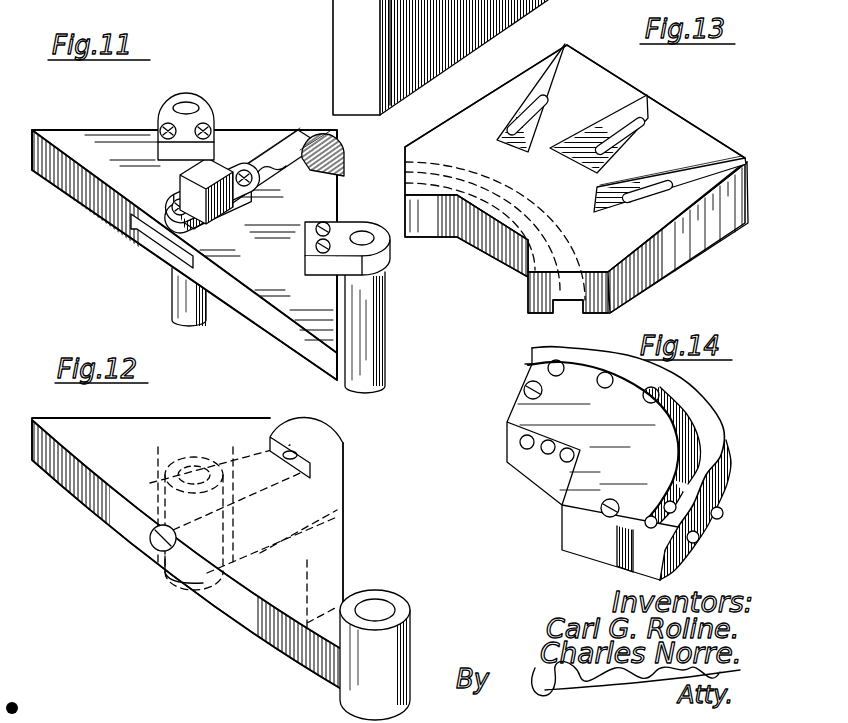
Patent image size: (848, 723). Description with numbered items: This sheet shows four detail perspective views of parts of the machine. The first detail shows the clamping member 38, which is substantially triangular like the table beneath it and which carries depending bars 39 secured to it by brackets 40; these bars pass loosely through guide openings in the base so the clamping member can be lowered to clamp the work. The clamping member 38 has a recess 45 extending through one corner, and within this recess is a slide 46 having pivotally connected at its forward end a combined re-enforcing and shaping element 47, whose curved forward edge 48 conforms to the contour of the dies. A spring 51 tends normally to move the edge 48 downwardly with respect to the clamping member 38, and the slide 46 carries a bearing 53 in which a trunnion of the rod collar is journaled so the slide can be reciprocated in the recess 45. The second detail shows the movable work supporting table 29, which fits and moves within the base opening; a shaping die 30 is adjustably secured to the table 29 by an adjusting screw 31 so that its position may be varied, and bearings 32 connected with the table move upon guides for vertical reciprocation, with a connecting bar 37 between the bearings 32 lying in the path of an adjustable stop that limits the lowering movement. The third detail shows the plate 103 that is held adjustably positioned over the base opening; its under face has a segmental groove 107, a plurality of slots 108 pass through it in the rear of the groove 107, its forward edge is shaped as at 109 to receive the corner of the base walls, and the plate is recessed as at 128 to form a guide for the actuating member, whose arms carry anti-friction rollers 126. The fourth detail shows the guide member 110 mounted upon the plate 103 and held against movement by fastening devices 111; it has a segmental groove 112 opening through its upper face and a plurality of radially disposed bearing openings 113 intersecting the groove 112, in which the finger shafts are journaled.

In FIG. 11, the clamping member 38 is at (90, 143).
In FIG. 11, the depending bars 39 is at (185, 298).
In FIG. 11, the brackets 40 is at (170, 100).
In FIG. 11, the recess 45 is at (278, 165).
In FIG. 11, the slide 46 is at (128, 233).
In FIG. 11, the combined re-enforcing and shaping element 47 is at (331, 155).
In FIG. 11, the forward edge 48 is at (328, 146).
In FIG. 11, the spring 51 is at (262, 170).
In FIG. 11, the bearing 53 is at (197, 177).
In FIG. 12, the work supporting table 29 is at (100, 432).
In FIG. 12, the shaping die 30 is at (330, 440).
In FIG. 12, the adjusting screw 31 is at (150, 546).
In FIG. 12, the bearings 32 is at (160, 487).
In FIG. 12, the connecting bar 37 is at (281, 546).
In FIG. 13, the plate 103 is at (660, 223).
In FIG. 13, the segmental groove 107 is at (566, 304).
In FIG. 13, the slots 108 is at (543, 100).
In FIG. 13, the shaped forward edge 109 is at (493, 247).
In FIG. 13, the anti-friction rollers 126 is at (644, 118).
In FIG. 13, the recess 128 is at (667, 119).
In FIG. 14, the guide member 110 is at (598, 548).
In FIG. 14, the fastening devices 111 is at (530, 410).
In FIG. 14, the segmental groove 112 is at (655, 400).
In FIG. 14, the bearing openings 113 is at (567, 458).